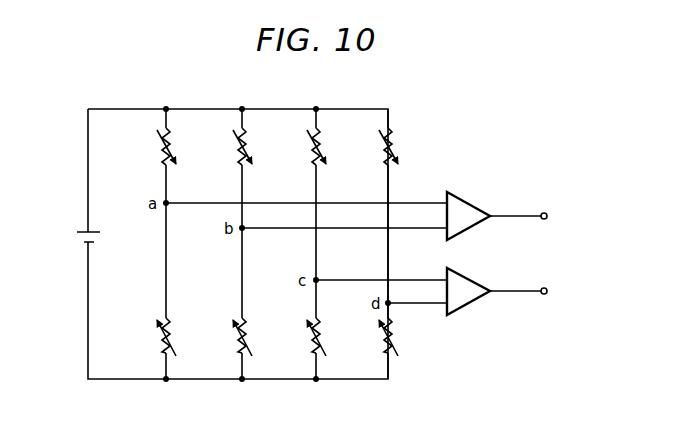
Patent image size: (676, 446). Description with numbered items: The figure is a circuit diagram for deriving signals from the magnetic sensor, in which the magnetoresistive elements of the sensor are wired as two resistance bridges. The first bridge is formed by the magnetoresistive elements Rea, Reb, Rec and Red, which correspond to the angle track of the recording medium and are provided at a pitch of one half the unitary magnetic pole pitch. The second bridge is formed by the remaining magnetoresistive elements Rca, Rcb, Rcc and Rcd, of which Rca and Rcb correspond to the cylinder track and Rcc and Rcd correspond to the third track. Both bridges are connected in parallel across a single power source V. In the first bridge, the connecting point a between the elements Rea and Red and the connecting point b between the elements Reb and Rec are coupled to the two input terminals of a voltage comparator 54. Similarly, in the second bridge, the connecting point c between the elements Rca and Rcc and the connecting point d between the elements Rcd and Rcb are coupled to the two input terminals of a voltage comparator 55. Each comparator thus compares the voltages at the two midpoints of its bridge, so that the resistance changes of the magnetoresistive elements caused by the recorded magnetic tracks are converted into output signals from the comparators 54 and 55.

The voltage comparator 54 is at (474, 205).
The voltage comparator 55 is at (474, 281).
The power source V is at (82, 231).
The magnetoresistive element Rea is at (159, 148).
The magnetoresistive element Reb is at (235, 148).
The magnetoresistive element Rca is at (309, 148).
The magnetoresistive element Rcd is at (381, 148).
The magnetoresistive element Red is at (159, 340).
The magnetoresistive element Rec is at (235, 340).
The magnetoresistive element Rcc is at (309, 340).
The magnetoresistive element Rcb is at (381, 340).